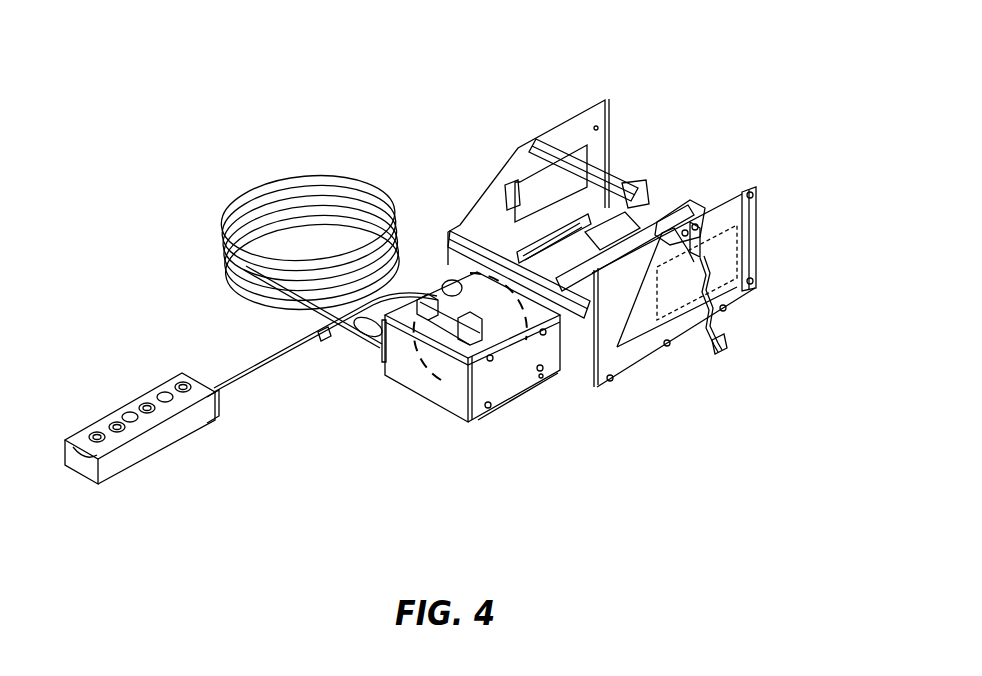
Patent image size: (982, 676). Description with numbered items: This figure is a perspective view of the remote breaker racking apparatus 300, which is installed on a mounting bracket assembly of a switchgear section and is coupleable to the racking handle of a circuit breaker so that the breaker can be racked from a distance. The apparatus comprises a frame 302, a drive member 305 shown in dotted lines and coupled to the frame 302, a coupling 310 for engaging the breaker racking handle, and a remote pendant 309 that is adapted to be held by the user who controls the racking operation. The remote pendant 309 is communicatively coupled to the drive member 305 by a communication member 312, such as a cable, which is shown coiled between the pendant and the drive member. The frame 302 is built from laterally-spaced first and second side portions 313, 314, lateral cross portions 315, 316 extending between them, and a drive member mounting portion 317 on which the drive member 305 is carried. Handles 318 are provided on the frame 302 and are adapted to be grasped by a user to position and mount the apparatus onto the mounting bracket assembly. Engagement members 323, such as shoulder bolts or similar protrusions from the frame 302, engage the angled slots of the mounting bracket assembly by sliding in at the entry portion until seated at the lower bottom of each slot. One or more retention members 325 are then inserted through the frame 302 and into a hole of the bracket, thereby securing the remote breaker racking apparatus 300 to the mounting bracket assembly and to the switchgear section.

The remote breaker racking apparatus 300 is at (450, 88).
The frame 302 is at (640, 371).
The drive member 305 is at (455, 381).
The remote pendant 309 is at (138, 388).
The coupling 310 is at (608, 178).
The communication member 312 is at (245, 198).
The first side portion 313 is at (518, 167).
The second side portion 314 is at (735, 293).
The lateral cross portion 315 is at (657, 210).
The lateral cross portion 316 is at (574, 328).
The drive member mounting portion 317 is at (519, 387).
The handles 318 is at (442, 300).
The engagement members 323 is at (607, 104).
The retention members 325 is at (508, 215).